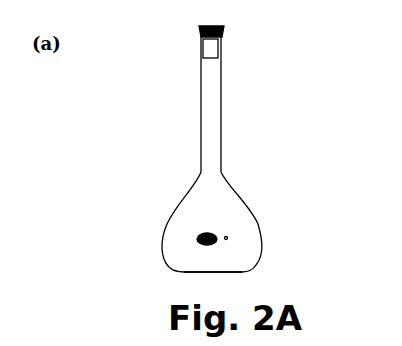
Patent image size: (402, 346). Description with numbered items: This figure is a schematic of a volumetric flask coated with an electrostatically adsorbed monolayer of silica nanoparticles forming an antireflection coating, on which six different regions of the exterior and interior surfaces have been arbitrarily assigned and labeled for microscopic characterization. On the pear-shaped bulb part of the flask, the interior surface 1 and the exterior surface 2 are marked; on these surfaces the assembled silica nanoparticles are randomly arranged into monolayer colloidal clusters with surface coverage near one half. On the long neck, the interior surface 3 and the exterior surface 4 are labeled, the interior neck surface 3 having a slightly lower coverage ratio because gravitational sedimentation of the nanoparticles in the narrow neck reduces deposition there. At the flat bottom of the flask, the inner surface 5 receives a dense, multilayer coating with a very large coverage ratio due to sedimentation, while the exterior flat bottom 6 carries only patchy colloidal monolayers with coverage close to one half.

The interior surface of the pear-shaped bulb 1 is at (247, 208).
The exterior surface of the pear-shaped bulb 2 is at (210, 246).
The interior surface of the long neck 3 is at (237, 195).
The exterior surface of the long neck 4 is at (222, 130).
The inner surface of the flat bottom 5 is at (203, 115).
The exterior flat bottom 6 is at (237, 278).